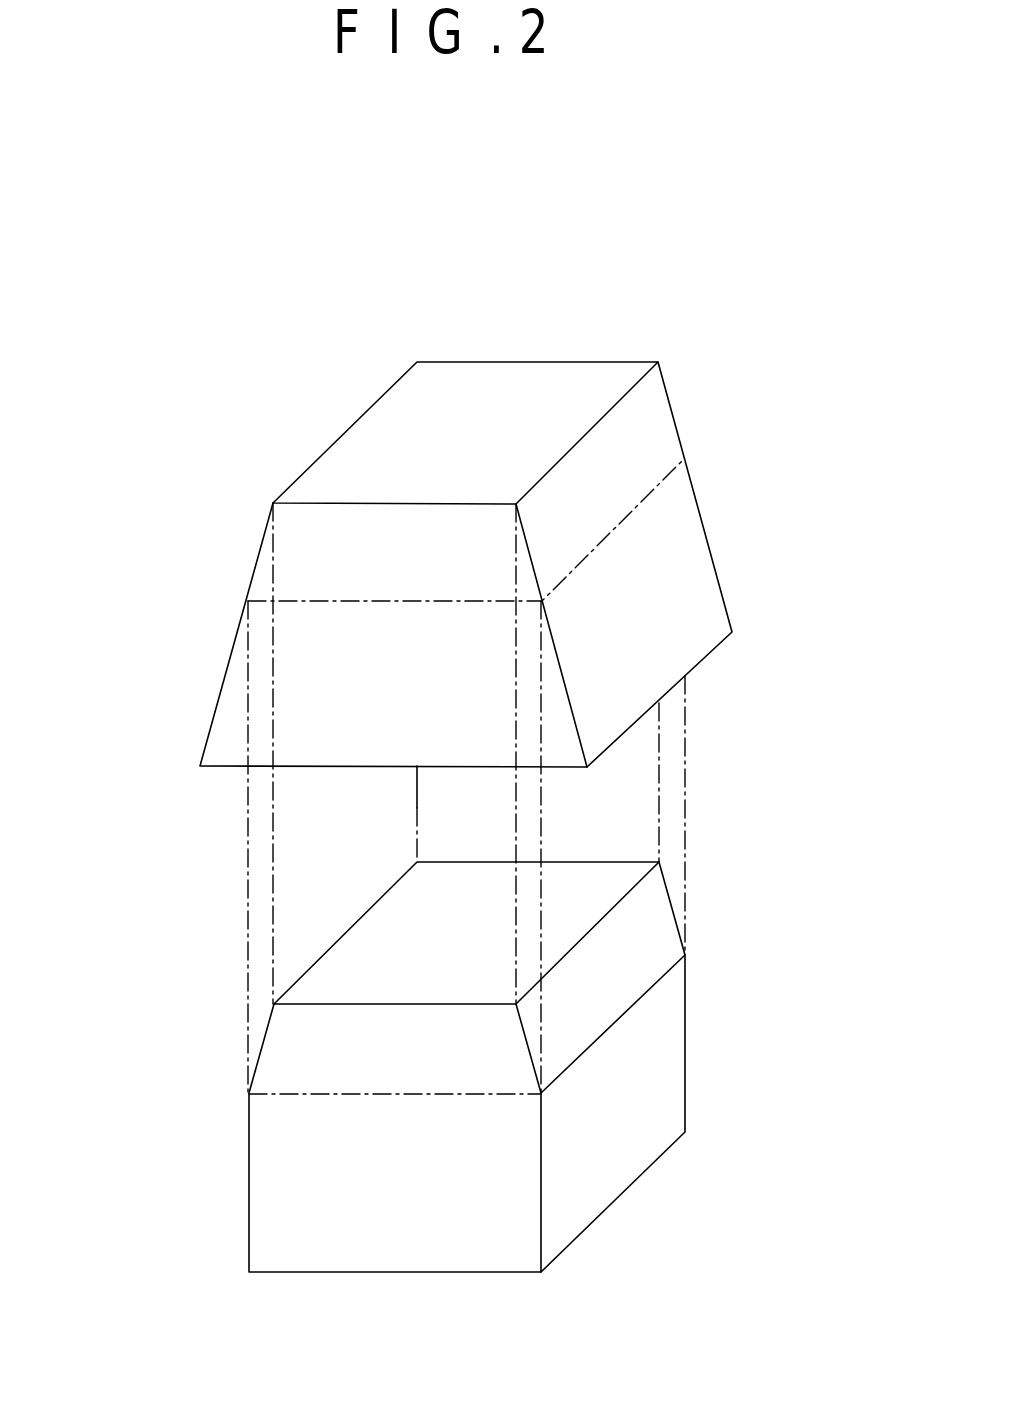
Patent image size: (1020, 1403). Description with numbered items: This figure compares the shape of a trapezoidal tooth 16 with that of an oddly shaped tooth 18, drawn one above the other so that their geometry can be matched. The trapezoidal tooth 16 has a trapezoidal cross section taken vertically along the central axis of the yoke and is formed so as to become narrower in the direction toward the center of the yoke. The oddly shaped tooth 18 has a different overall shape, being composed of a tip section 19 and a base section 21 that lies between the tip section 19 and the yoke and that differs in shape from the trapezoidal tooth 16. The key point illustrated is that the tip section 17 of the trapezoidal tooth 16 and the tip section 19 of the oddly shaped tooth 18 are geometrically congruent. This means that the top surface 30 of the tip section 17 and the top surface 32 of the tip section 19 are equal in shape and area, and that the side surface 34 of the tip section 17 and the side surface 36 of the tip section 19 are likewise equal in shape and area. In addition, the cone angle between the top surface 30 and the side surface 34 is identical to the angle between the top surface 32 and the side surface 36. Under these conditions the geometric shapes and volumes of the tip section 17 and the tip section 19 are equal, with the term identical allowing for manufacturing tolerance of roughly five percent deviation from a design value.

The trapezoidal tooth 16 is at (772, 578).
The tip section 17 is at (367, 407).
The oddly shaped tooth 18 is at (745, 1060).
The tip section 19 is at (390, 887).
The base section 21 is at (247, 1173).
The top surface 30 is at (463, 410).
The top surface 32 is at (400, 940).
The side surface 34 is at (345, 560).
The side surface 36 is at (335, 1050).